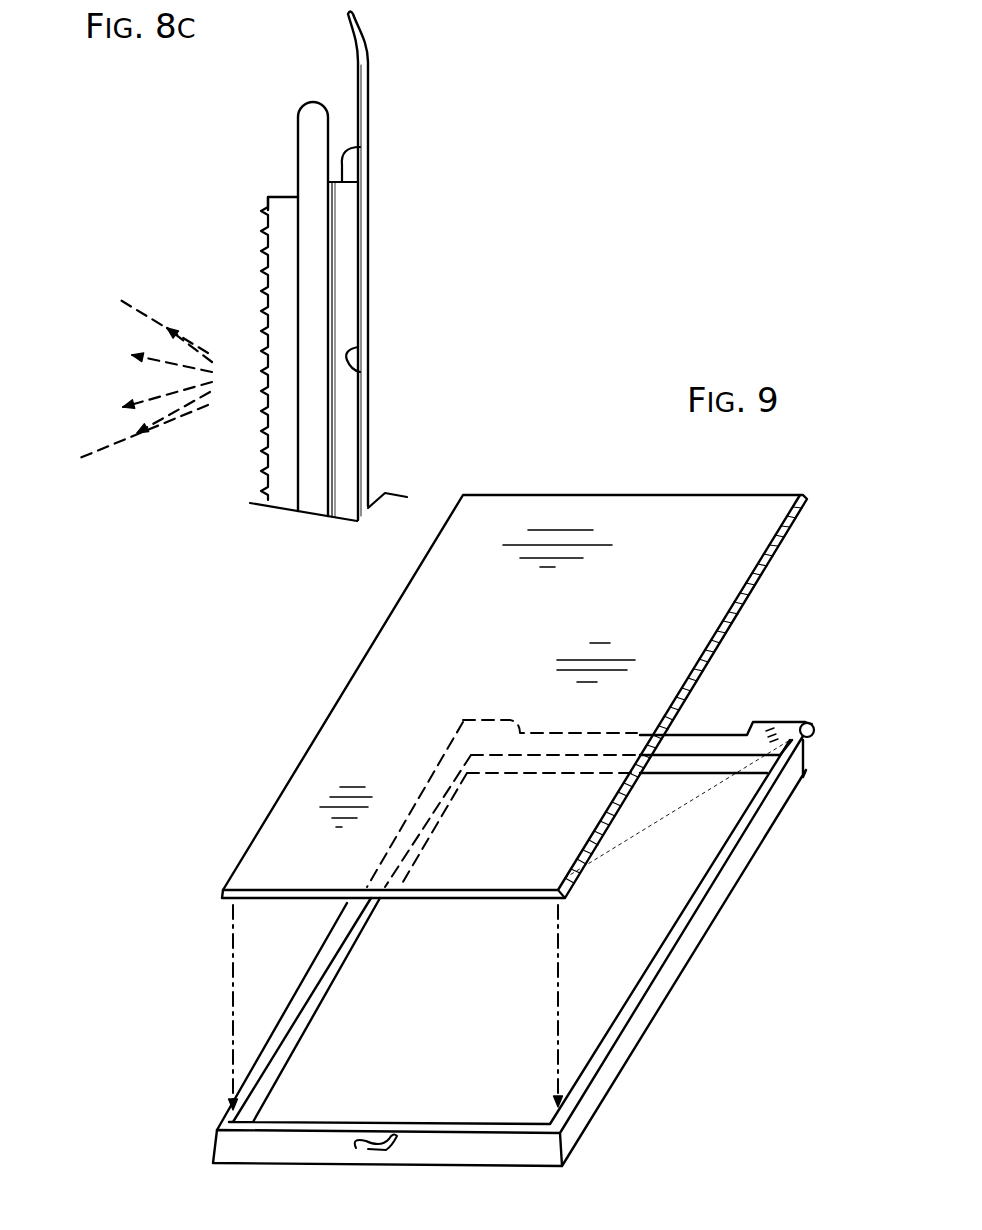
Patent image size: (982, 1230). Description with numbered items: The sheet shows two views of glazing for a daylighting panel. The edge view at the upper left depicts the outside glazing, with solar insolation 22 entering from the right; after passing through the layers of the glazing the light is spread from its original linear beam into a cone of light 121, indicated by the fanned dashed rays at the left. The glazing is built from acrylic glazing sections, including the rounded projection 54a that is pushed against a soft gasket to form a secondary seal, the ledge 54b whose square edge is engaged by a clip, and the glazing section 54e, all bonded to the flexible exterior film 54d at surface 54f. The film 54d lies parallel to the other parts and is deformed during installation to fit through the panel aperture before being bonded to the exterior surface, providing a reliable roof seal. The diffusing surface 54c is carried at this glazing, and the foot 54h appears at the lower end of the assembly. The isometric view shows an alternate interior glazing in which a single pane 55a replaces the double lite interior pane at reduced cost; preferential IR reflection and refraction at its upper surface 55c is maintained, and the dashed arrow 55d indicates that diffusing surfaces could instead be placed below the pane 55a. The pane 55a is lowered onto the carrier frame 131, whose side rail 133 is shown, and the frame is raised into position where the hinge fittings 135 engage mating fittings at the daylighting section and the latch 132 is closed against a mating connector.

In FIG. 8C, the rounded projection 54a is at (312, 140).
In FIG. 8C, the ledge 54b is at (288, 205).
In FIG. 8C, the diffusing surface 54c is at (257, 288).
In FIG. 8C, the exterior film 54d is at (362, 40).
In FIG. 8C, the acrylic glazing section 54e is at (360, 147).
In FIG. 8C, the bonding surface 54f is at (360, 372).
In FIG. 8C, the base foot 54h is at (373, 445).
In FIG. 8C, the solar insolation 22 is at (396, 279).
In FIG. 8C, the cone of light 121 is at (107, 290).
In FIG. 9, the single pane 55a is at (690, 510).
In FIG. 9, the upper surface 55c is at (348, 810).
In FIG. 9, the dashed arrow 55d is at (797, 700).
In FIG. 9, the carrier frame 131 is at (587, 1103).
In FIG. 9, the latch 132 is at (386, 1155).
In FIG. 9, the side rail 133 is at (597, 967).
In FIG. 9, the hinge fittings 135 is at (823, 718).